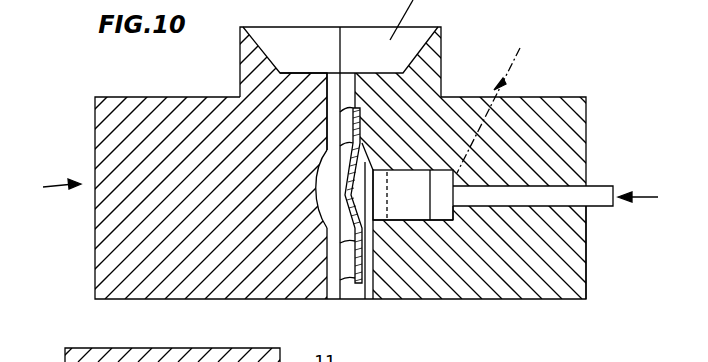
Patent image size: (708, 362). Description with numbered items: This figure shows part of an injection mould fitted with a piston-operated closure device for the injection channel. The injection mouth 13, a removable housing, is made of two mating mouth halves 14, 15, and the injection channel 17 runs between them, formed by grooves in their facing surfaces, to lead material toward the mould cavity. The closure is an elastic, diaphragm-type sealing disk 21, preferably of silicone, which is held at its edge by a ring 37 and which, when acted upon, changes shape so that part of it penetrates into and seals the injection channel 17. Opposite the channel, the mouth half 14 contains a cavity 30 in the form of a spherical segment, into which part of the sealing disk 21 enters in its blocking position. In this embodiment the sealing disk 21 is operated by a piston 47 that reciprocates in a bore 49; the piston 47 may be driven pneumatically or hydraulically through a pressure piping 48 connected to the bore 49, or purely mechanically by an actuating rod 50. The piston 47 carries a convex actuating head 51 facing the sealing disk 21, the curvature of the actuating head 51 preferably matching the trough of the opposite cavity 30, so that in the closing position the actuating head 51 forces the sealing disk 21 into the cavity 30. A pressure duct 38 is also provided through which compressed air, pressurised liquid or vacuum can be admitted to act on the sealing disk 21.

The injection mouth 13 is at (48, 189).
The mouth half 14 is at (122, 112).
The mouth half 15 is at (555, 110).
The injection channel 17 is at (334, 293).
The sealing disk 21 is at (329, 242).
The cavity 30 is at (318, 188).
The ring 37 is at (349, 267).
The pressure duct 38 is at (175, 355).
The piston 47 is at (403, 197).
The pressure piping 48 is at (477, 108).
The bore 49 is at (443, 213).
The actuating rod 50 is at (588, 196).
The actuating head 51 is at (369, 242).